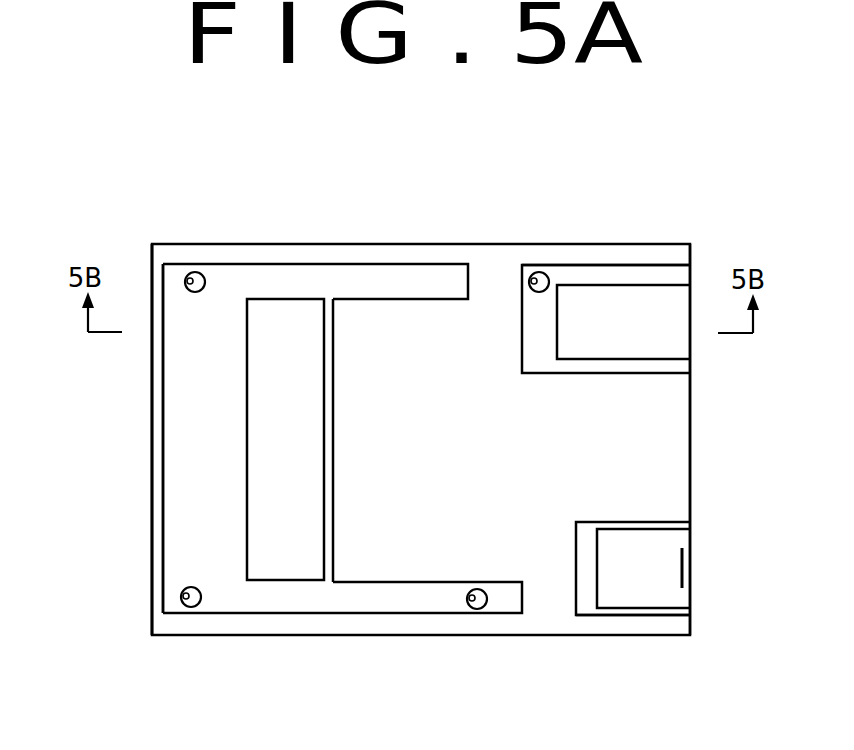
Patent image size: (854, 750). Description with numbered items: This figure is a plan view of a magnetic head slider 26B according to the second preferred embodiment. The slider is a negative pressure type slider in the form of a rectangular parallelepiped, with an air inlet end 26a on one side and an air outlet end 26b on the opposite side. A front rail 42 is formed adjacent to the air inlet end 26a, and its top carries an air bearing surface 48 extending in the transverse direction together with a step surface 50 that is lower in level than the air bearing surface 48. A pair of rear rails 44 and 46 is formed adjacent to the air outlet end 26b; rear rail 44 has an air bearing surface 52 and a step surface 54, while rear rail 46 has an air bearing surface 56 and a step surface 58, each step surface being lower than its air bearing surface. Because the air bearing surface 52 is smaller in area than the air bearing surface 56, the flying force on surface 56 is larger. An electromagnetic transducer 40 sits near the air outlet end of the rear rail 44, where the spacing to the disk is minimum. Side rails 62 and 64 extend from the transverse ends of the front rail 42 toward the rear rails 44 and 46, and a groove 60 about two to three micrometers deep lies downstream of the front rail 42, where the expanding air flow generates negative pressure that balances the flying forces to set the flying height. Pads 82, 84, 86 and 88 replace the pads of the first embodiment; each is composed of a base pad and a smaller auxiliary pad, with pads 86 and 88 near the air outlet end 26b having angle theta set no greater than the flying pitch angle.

The magnetic head slider 26B is at (442, 238).
The air inlet end 26a is at (150, 402).
The air outlet end 26b is at (690, 438).
The electromagnetic transducer 40 is at (684, 568).
The front rail 42 is at (163, 463).
The rear rail 44 is at (636, 617).
The rear rail 46 is at (616, 265).
The air bearing surface 48 is at (279, 308).
The step surface 50 is at (181, 505).
The air bearing surface 52 is at (630, 537).
The step surface 54 is at (585, 565).
The air bearing surface 56 is at (617, 340).
The step surface 58 is at (532, 330).
The groove 60 is at (445, 449).
The side rail 62 is at (360, 617).
The side rail 64 is at (386, 265).
The pad 82 is at (197, 607).
The pad 84 is at (196, 272).
The pad 86 is at (541, 272).
The pad 88 is at (479, 609).